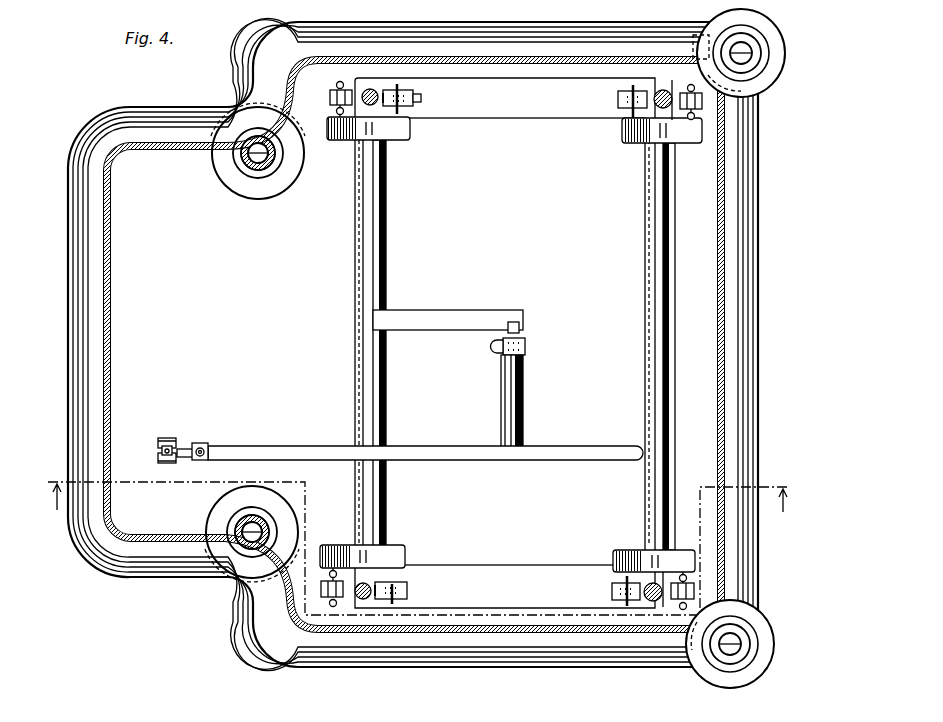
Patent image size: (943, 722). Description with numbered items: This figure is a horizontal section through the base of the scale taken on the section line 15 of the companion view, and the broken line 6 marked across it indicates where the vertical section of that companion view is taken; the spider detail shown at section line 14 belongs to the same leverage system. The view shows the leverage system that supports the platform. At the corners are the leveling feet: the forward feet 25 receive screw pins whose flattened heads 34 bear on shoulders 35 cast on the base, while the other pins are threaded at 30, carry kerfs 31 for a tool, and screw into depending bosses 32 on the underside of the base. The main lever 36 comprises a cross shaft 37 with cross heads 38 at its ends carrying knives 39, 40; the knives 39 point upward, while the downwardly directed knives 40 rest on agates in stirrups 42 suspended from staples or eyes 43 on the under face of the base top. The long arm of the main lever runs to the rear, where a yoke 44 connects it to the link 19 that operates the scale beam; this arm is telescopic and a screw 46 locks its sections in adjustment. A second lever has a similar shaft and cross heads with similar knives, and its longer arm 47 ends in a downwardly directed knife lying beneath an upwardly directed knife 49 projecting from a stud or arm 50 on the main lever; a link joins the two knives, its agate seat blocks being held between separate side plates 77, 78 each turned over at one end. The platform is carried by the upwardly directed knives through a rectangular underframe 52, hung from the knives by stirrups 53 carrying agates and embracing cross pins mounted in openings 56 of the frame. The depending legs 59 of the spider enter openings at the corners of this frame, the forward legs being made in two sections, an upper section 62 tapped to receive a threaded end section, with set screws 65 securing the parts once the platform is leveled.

The casing 15 is at (520, 657).
The section line 6— 6 is at (419, 543).
The pivot ring 14 is at (277, 173).
The kerf 31 is at (247, 167).
The depending boss 32 is at (267, 140).
The threaded portion 30 is at (260, 167).
The foot 25 is at (783, 37).
The shoulder 35 is at (755, 68).
The flattened head 34 is at (752, 57).
The rectangular underframe 52 is at (364, 358).
The cross shaft 37 is at (670, 333).
The cross head 38 is at (628, 143).
The longer arm 47 is at (468, 313).
The upwardly directed knife 49 is at (522, 330).
The side plate 78 is at (527, 346).
The side plate 77 is at (495, 347).
The stud or arm 50 is at (525, 383).
The main lever 36 is at (563, 450).
The screw 46 is at (207, 447).
The yoke 44 is at (163, 440).
The link 19 is at (157, 453).
The stirrup 53 is at (415, 100).
The opening 56 is at (413, 107).
The upwardly directed knife 39 is at (630, 118).
The depending leg 59 is at (364, 91).
The upper section 62 is at (663, 90).
The set screw 65 is at (678, 85).
The stirrup 42 is at (328, 96).
The staple or eye 43 is at (341, 85).
The downwardly directed knife 40 is at (697, 117).